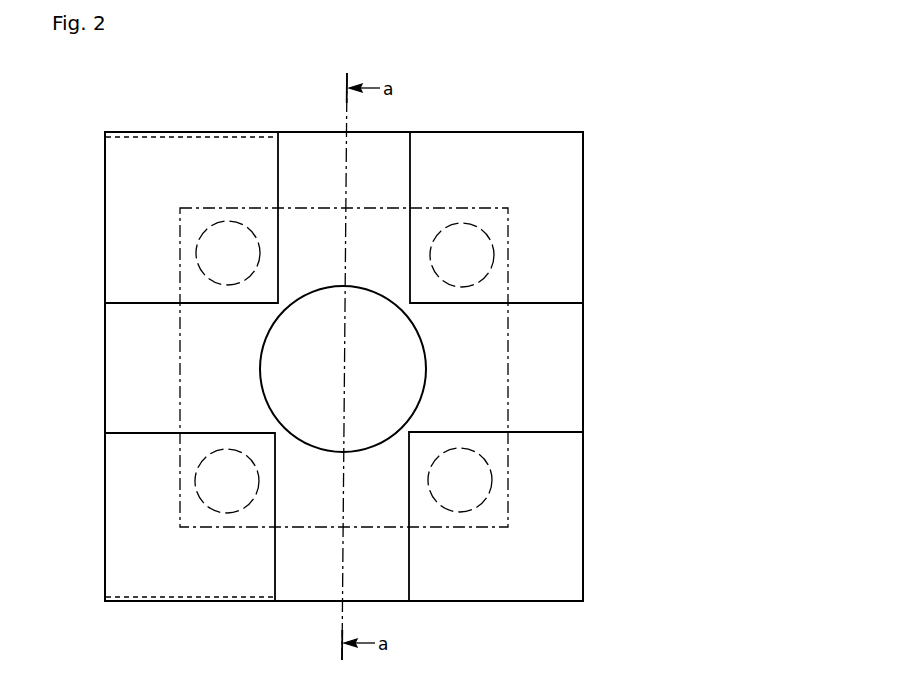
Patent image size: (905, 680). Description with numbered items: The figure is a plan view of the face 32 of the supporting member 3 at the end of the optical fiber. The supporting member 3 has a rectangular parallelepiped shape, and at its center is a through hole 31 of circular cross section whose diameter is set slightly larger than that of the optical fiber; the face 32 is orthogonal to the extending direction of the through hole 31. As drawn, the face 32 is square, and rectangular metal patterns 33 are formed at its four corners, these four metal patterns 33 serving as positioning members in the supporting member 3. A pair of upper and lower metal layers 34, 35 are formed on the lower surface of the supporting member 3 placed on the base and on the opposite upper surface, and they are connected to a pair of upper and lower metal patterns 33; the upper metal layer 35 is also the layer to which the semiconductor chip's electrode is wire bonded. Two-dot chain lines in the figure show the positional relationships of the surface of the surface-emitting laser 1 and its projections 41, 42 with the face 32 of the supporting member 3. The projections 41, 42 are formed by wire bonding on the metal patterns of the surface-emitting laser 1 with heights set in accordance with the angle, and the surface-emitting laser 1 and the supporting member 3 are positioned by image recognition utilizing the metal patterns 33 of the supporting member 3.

The surface-emitting laser 1 is at (511, 233).
The supporting member 3 is at (596, 347).
The through hole 31 is at (378, 296).
The face 32 is at (384, 157).
The metal patterns 33 is at (137, 186).
The metal layer 34 is at (185, 604).
The metal layer 35 is at (190, 131).
The projection 41 is at (196, 251).
The projection 42 is at (195, 483).